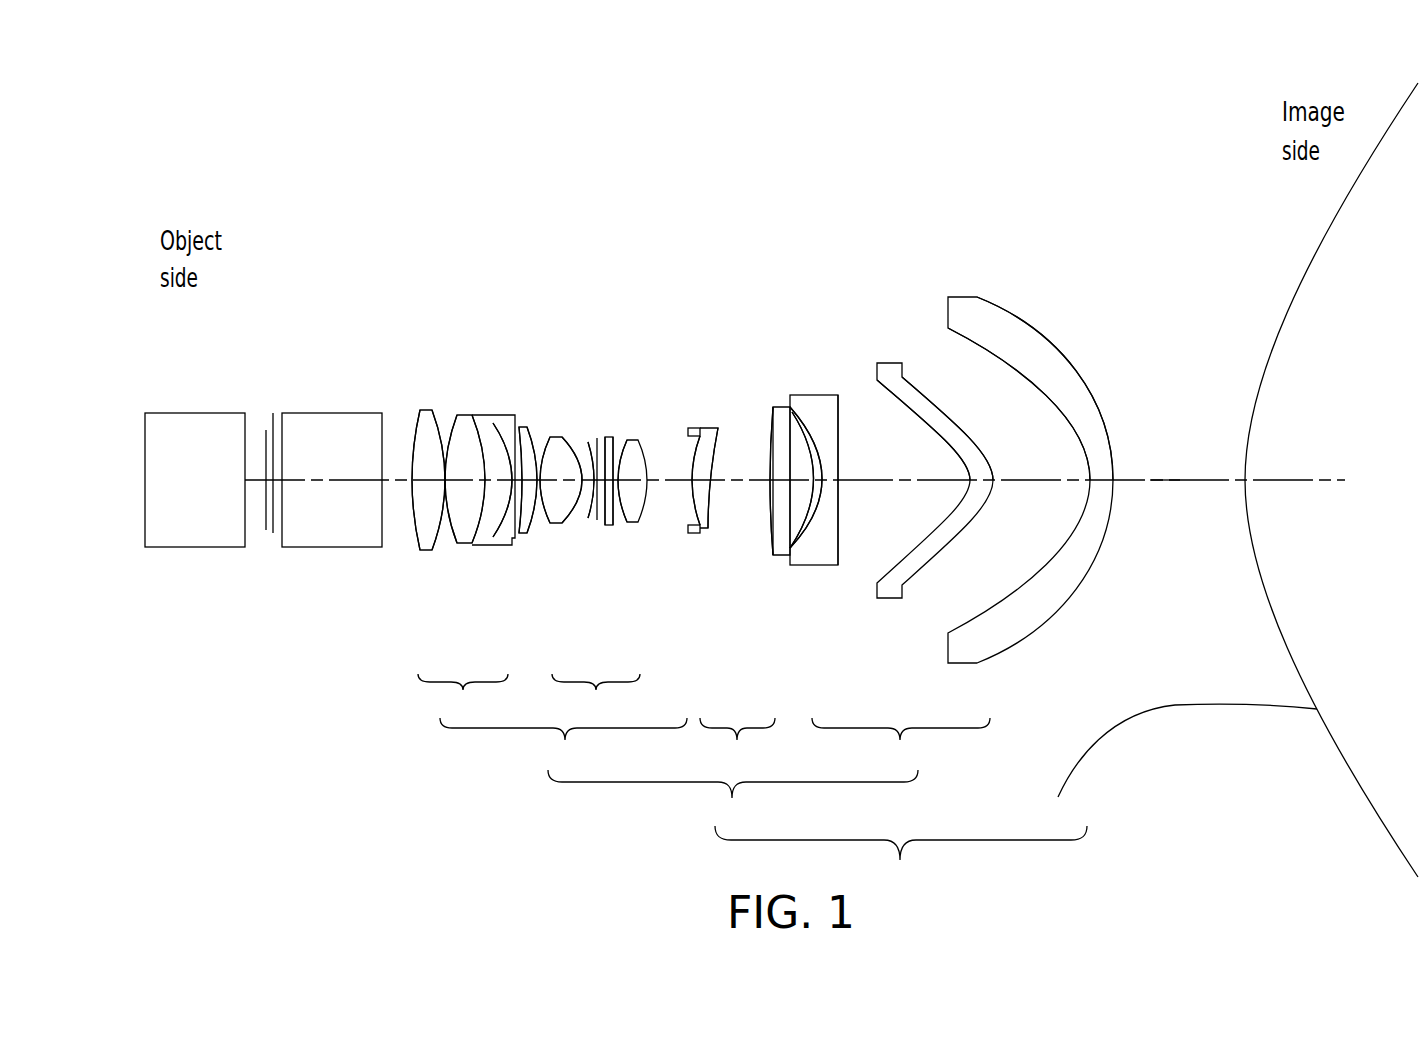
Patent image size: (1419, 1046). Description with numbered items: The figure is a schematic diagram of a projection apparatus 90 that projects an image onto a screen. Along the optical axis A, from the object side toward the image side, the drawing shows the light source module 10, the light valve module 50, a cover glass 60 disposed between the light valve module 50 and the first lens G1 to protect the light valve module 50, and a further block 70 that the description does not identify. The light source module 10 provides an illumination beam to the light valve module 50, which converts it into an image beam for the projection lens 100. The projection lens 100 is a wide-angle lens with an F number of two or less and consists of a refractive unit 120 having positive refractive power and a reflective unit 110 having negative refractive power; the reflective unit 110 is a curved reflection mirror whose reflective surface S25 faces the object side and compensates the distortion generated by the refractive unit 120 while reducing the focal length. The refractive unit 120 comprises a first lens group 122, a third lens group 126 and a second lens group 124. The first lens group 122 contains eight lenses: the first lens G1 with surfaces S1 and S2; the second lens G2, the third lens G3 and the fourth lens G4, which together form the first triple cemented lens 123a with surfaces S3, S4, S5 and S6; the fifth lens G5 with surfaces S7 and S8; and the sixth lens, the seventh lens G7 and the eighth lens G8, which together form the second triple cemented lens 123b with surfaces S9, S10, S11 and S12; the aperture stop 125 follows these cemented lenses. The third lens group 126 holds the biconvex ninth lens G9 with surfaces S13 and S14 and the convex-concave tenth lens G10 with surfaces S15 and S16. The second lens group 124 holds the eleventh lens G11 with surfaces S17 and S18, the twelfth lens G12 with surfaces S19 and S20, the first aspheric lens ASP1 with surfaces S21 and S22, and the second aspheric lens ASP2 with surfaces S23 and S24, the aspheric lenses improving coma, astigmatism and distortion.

The light source module 10 is at (185, 413).
The light valve module 50 is at (265, 430).
The cover glass 60 is at (273, 413).
The prism 70 is at (340, 413).
The projection apparatus 90 is at (1268, 878).
The projection lens 100 is at (901, 858).
The reflective unit 110 is at (1172, 767).
The refractive unit 120 is at (733, 800).
The first lens group 122 is at (563, 744).
The first triple cemented lens 123a is at (463, 696).
The second triple cemented lens 123b is at (596, 696).
The second lens group 124 is at (901, 744).
The aperture stop 125 is at (632, 523).
The third lens group 126 is at (737, 744).
The optical axis A is at (1163, 480).
The first lens G1 is at (425, 552).
The second lens G2 is at (462, 545).
The third lens G3 is at (490, 546).
The fourth lens G4 is at (507, 546).
The fifth lens G5 is at (904, 487).
The seventh lens G7 is at (570, 531).
The eighth lens G8 is at (610, 526).
The ninth lens G9 is at (695, 535).
The tenth lens G10 is at (770, 555).
The eleventh lens G11 is at (780, 556).
The twelfth lens G12 is at (797, 566).
The first aspheric lens ASP1 is at (890, 598).
The second aspheric lens ASP2 is at (960, 663).
The surface S1 is at (405, 449).
The surface S2 is at (433, 435).
The surface S3 is at (460, 445).
The surface S4 is at (486, 430).
The surface S5 is at (506, 442).
The surface S6 is at (529, 428).
The surface S7 is at (543, 441).
The surface S8 is at (553, 419).
The surface S9 is at (568, 435).
The surface S10 is at (575, 455).
The surface S11 is at (610, 419).
The surface S12 is at (616, 454).
The surface S13 is at (636, 439).
The surface S14 is at (649, 453).
The surface S15 is at (691, 434).
The surface S16 is at (724, 457).
The surface S17 is at (760, 454).
The surface S18 is at (798, 426).
The surface S19 is at (810, 439).
The surface S20 is at (840, 426).
The surface S21 is at (907, 405).
The surface S22 is at (941, 394).
The surface S23 is at (999, 359).
The surface S24 is at (1045, 363).
The surface S25 is at (1314, 480).